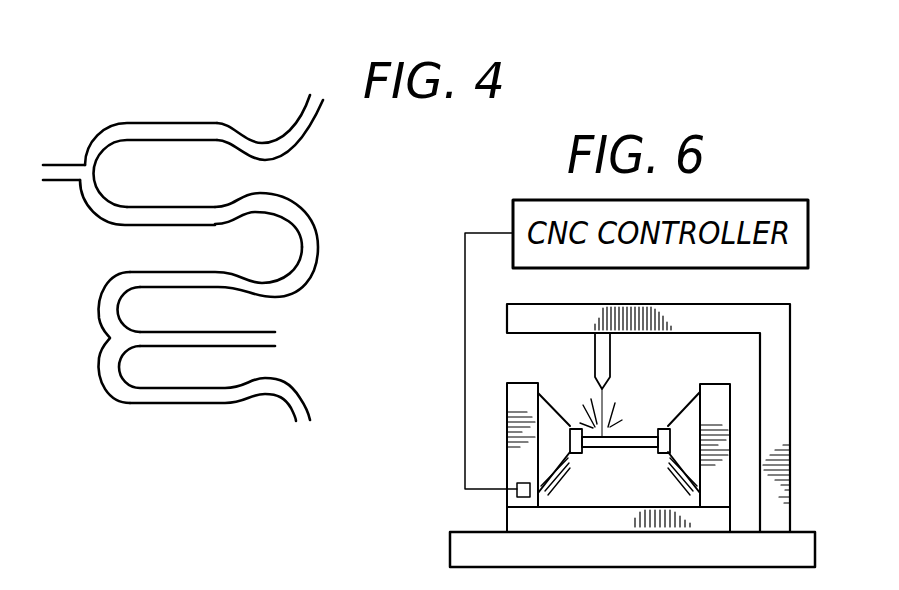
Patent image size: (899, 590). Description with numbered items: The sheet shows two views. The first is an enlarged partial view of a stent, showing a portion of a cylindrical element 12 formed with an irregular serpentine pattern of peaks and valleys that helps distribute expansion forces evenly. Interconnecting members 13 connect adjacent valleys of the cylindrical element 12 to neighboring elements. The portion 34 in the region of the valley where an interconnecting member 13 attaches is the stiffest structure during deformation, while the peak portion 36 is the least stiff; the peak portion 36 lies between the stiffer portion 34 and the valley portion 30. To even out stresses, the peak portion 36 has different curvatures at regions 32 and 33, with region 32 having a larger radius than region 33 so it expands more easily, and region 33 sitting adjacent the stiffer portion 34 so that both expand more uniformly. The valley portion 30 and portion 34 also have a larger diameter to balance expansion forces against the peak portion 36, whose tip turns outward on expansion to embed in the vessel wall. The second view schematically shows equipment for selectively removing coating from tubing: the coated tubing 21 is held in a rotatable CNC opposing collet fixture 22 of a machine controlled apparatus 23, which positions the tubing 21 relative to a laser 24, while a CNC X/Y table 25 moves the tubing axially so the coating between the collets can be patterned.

In FIG. 4, the cylindrical element 12 is at (170, 105).
In FIG. 4, the interconnecting member 13 is at (67, 163).
In FIG. 4, the valley portion 30 is at (97, 170).
In FIG. 4, the region 32 is at (262, 213).
In FIG. 4, the region 33 is at (290, 278).
In FIG. 4, the portion 34 is at (118, 310).
In FIG. 4, the peak portion 36 is at (322, 215).
In FIG. 6, the coated tubing 21 is at (632, 447).
In FIG. 6, the rotatable collet fixture 22 is at (562, 402).
In FIG. 6, the machine controlled apparatus 23 is at (738, 376).
In FIG. 6, the laser 24 is at (620, 363).
In FIG. 6, the CNC X/Y table 25 is at (832, 533).